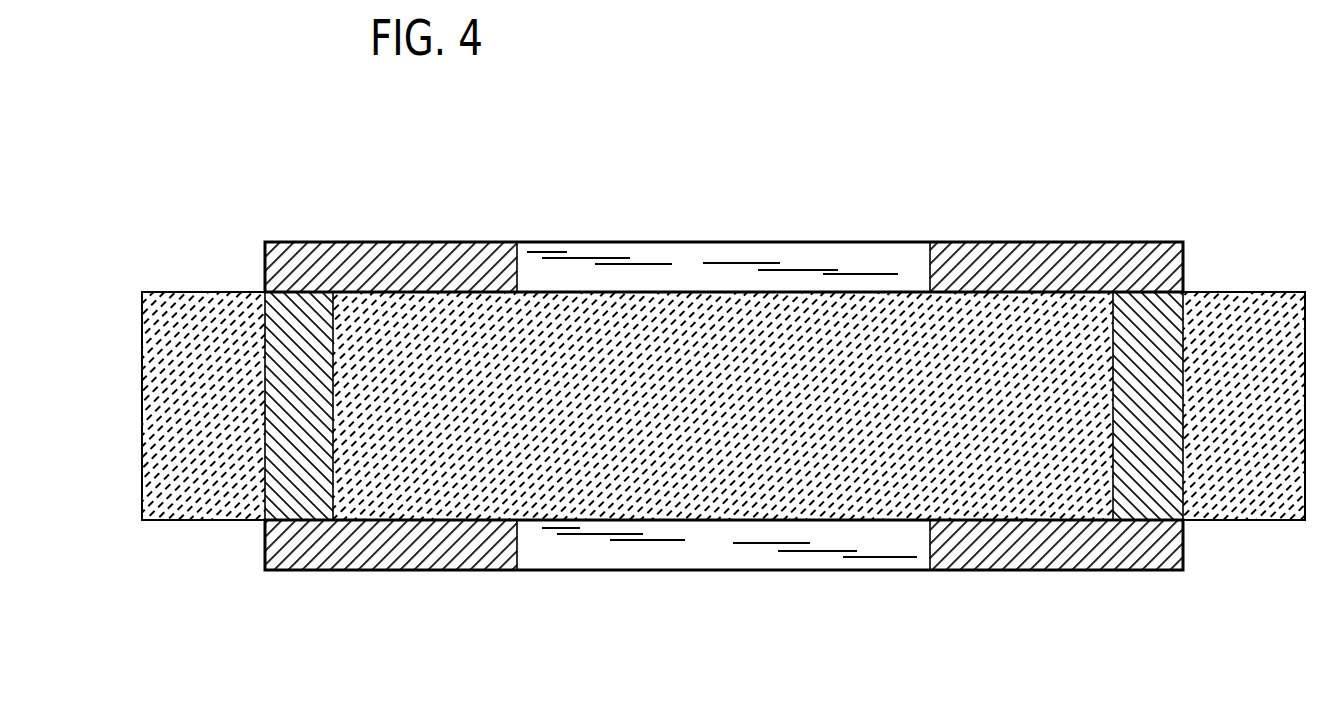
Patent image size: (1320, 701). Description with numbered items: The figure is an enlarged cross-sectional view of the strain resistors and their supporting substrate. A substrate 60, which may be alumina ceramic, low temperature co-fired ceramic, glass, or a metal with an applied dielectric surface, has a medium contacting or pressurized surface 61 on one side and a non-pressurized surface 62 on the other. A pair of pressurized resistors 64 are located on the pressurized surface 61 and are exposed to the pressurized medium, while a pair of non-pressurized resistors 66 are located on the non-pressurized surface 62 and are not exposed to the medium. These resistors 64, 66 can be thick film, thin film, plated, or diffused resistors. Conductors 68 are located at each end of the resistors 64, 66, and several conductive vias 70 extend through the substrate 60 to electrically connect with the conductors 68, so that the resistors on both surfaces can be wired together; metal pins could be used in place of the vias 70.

The substrate 60 is at (142, 399).
The pressurized surface 61 is at (213, 520).
The non-pressurized surface 62 is at (195, 292).
The pressurized resistors 64 is at (728, 572).
The non-pressurized resistors 66 is at (787, 242).
The conductors 68 is at (384, 242).
The conductive vias 70 is at (338, 411).